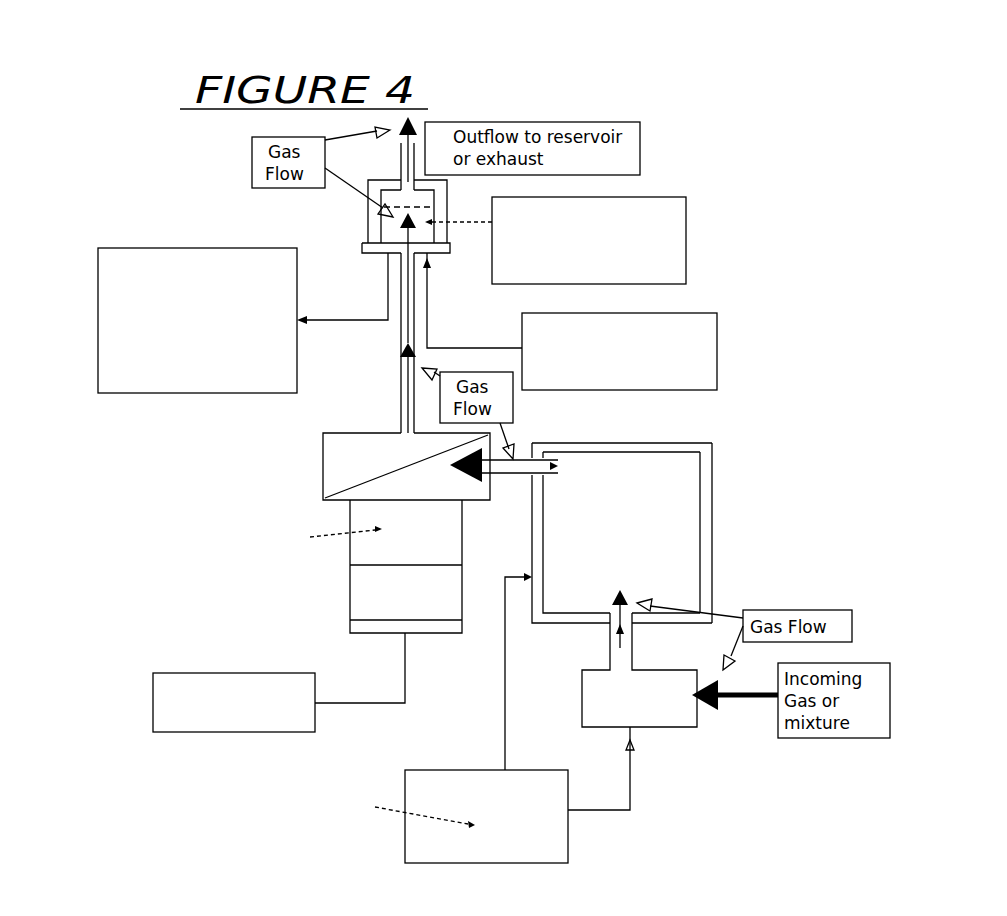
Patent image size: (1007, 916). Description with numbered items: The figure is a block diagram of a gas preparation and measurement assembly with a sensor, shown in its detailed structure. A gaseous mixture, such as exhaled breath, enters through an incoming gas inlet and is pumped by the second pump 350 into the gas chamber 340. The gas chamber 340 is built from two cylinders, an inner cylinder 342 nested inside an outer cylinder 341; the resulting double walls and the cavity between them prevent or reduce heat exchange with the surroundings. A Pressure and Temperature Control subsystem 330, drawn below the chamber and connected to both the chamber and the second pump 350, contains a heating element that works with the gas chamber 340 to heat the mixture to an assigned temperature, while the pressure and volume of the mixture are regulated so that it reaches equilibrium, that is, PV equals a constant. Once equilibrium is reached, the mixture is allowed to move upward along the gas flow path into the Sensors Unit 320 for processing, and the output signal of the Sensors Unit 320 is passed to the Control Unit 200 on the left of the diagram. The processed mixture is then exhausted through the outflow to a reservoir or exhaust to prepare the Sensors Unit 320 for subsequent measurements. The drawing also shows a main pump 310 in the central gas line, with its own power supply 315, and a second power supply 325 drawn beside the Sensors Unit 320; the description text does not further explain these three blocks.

The Control Unit 200 is at (114, 360).
The main pump 310 is at (176, 538).
The power supply of main pump 315 is at (140, 683).
The Sensors Unit 320 is at (662, 231).
The power supply of sensors unit 325 is at (695, 331).
The Pressure and Temperature Control subsystem 330 is at (540, 840).
The gas chamber 340 is at (695, 582).
The outer cylinder 341 is at (726, 506).
The inner cylinder 342 is at (712, 459).
The pump 2 350 is at (686, 725).